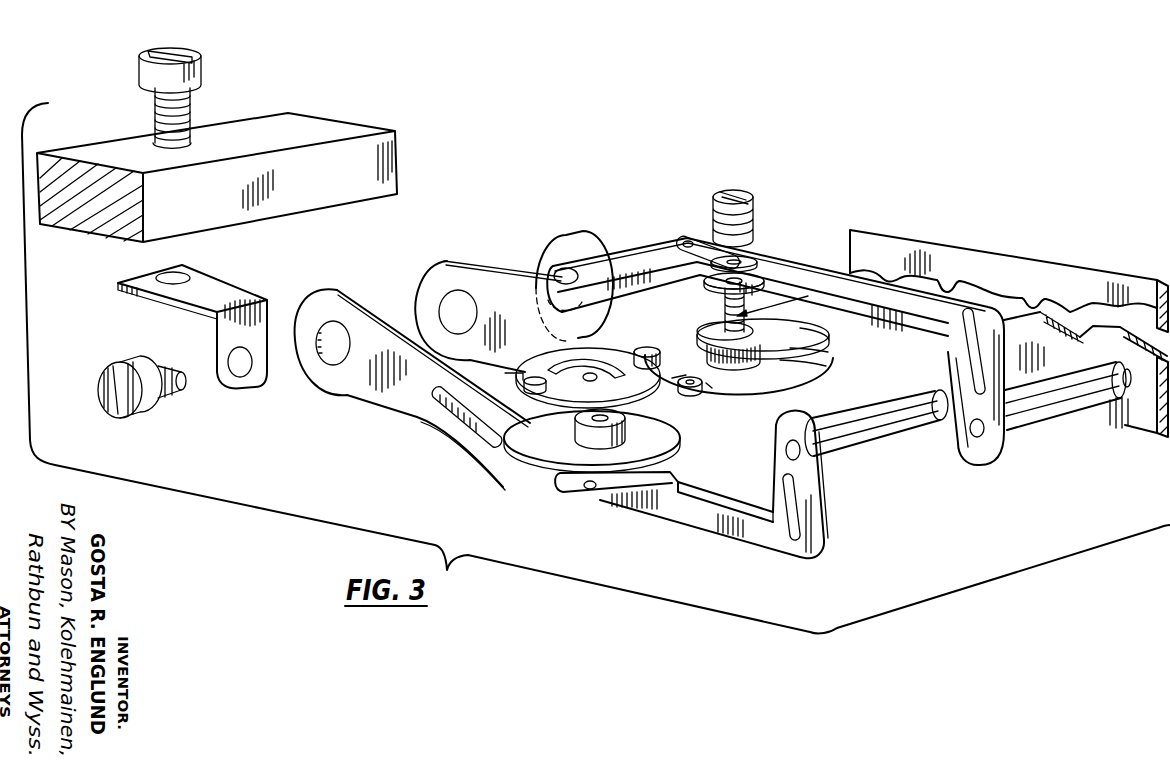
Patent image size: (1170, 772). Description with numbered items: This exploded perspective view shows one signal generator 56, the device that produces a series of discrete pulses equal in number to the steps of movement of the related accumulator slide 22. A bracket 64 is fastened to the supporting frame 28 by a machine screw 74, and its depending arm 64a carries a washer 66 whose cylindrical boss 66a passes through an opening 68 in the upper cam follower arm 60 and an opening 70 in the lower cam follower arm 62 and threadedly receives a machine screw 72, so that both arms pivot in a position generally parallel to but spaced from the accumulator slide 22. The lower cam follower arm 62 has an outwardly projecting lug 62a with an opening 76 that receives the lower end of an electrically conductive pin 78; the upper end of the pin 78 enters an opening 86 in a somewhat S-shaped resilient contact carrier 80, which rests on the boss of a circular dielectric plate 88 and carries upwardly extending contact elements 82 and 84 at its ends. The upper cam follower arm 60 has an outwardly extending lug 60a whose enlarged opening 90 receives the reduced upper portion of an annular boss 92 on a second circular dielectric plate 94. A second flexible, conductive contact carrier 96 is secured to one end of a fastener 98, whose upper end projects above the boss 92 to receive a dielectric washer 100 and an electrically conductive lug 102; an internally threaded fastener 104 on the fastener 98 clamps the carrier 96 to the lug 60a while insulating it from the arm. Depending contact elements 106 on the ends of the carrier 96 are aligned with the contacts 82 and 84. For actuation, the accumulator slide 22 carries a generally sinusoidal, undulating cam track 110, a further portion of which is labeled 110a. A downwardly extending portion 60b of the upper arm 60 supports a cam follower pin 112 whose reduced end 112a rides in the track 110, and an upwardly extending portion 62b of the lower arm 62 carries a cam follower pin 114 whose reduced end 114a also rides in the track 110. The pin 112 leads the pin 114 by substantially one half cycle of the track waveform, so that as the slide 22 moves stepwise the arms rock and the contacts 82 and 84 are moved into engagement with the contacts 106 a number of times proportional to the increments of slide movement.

The accumulator slide 22 is at (1009, 319).
The supporting frame 28 is at (276, 123).
The signal generator 56 is at (576, 106).
The upper cam follower arm 60 is at (784, 346).
The outwardly extending lug 60a is at (707, 333).
The downwardly extending portion 60b is at (975, 454).
The lower cam follower arm 62 is at (675, 485).
The outwardly projecting lug 62a is at (600, 512).
The upwardly extending portion 62b is at (776, 450).
The bracket 64 is at (184, 326).
The depending arm 64a is at (230, 330).
The washer 66 is at (567, 271).
The cylindrical boss 66a is at (562, 272).
The opening 68 is at (440, 297).
The opening 70 is at (325, 357).
The machine screw 72 is at (146, 407).
The machine screw 74 is at (192, 53).
The opening 76 is at (592, 492).
The electrically conductive pin 78 is at (565, 427).
The resilient contact carrier 80 is at (501, 376).
The contact element 82 is at (530, 389).
The contact element 84 is at (647, 353).
The opening 86 is at (644, 390).
The circular dielectric plate 88 is at (668, 438).
The enlarged opening 90 is at (805, 333).
The annular boss 92 is at (805, 352).
The second circular dielectric plate 94 is at (808, 370).
The second contact carrier 96 is at (778, 388).
The fastener 98 is at (777, 301).
The dielectric washer 100 is at (745, 266).
The electrically conductive lug 102 is at (687, 240).
The internally threaded fastener 104 is at (752, 228).
The depending contact element 106 is at (690, 395).
The cam track 110 is at (946, 286).
The notch 110a is at (1034, 298).
The cam follower pin 112 is at (1068, 407).
The reduced diameter end portion 112a is at (1117, 422).
The cam follower pin 114 is at (876, 436).
The reduced diameter end portion 114a is at (940, 440).